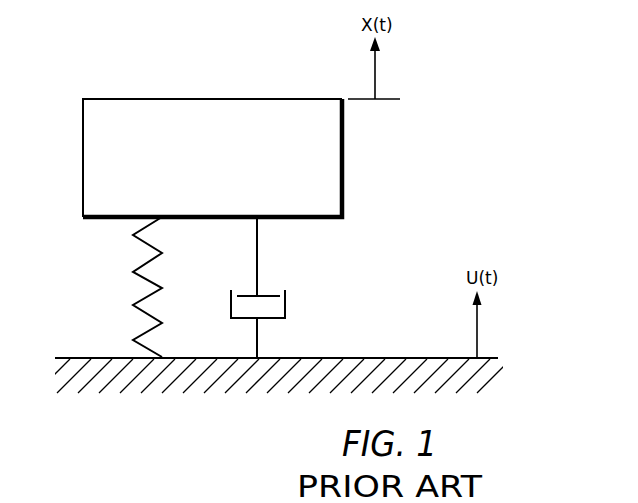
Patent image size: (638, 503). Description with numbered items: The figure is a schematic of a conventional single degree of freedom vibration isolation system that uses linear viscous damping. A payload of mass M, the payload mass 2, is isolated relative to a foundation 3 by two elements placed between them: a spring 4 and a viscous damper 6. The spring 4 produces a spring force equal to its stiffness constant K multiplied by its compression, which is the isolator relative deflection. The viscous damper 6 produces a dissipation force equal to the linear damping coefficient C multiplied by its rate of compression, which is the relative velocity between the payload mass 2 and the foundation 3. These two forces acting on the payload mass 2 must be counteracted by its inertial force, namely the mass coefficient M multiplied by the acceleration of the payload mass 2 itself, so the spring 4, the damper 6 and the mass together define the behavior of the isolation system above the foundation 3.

The payload mass 2 is at (154, 99).
The foundation 3 is at (371, 357).
The spring 4 is at (140, 298).
The viscous damper 6 is at (286, 303).